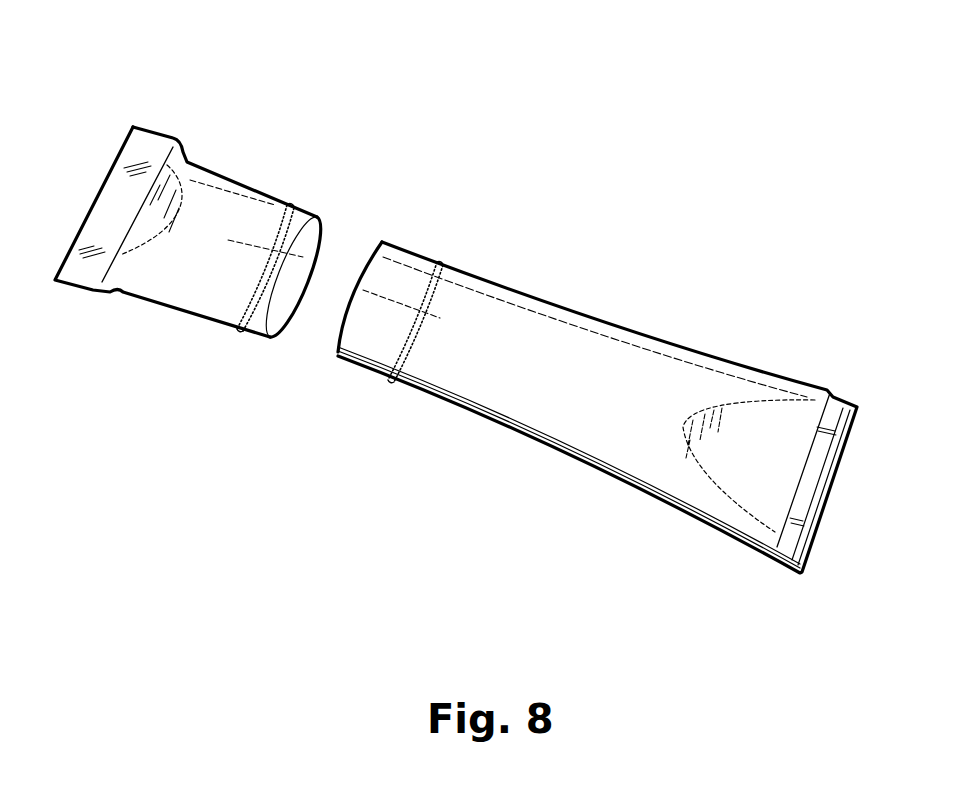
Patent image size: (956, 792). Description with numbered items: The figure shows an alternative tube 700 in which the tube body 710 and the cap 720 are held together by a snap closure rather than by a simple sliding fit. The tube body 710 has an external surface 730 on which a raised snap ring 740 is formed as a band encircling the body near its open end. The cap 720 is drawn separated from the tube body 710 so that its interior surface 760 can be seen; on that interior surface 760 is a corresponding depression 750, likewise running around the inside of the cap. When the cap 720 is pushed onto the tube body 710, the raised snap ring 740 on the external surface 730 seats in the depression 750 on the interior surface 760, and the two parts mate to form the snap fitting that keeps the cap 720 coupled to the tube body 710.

The tube 700 is at (405, 123).
The tube body 710 is at (655, 372).
The cap 720 is at (165, 283).
The external surface 730 is at (530, 378).
The raised snap ring 740 is at (420, 288).
The depression 750 is at (242, 292).
The interior surface 760 is at (298, 265).